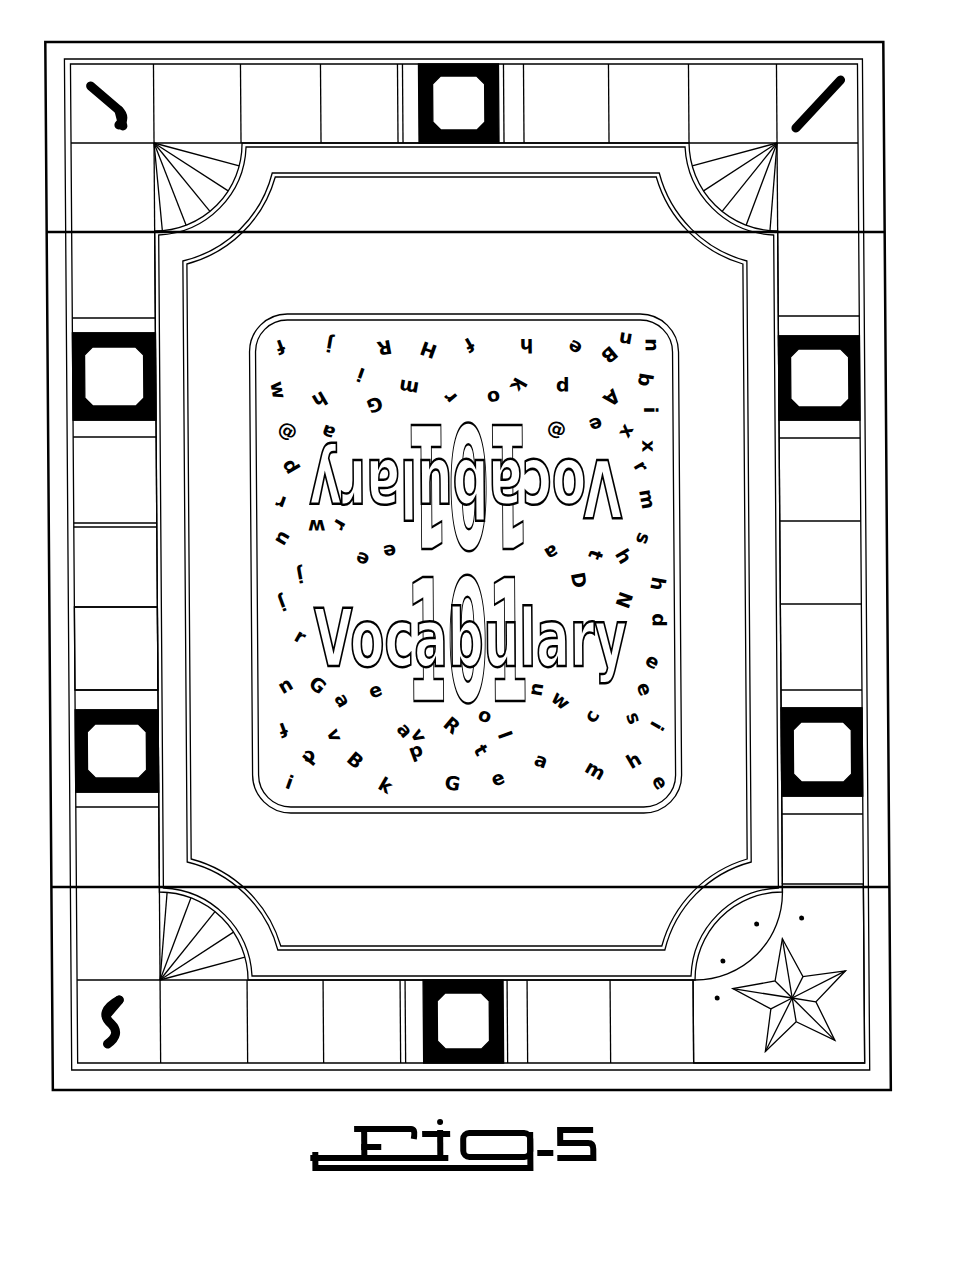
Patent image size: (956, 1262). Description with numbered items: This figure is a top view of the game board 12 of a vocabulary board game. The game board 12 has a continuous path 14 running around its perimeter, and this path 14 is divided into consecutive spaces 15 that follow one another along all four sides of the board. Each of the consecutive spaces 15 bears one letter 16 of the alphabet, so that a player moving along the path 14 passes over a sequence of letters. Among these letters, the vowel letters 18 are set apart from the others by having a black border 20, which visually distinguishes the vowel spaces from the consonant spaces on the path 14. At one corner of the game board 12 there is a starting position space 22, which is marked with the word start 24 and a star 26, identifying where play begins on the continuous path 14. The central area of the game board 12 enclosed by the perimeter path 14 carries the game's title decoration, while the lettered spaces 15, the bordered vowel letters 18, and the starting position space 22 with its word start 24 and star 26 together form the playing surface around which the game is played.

The game board 12 is at (490, 36).
The continuous path 14 is at (366, 976).
The consecutive spaces 15 is at (147, 545).
The letter 16 is at (137, 632).
The vowel letters 18 is at (157, 728).
The black border 20 is at (158, 774).
The starting position space 22 is at (726, 1050).
The word start 24 is at (723, 940).
The star 26 is at (821, 970).